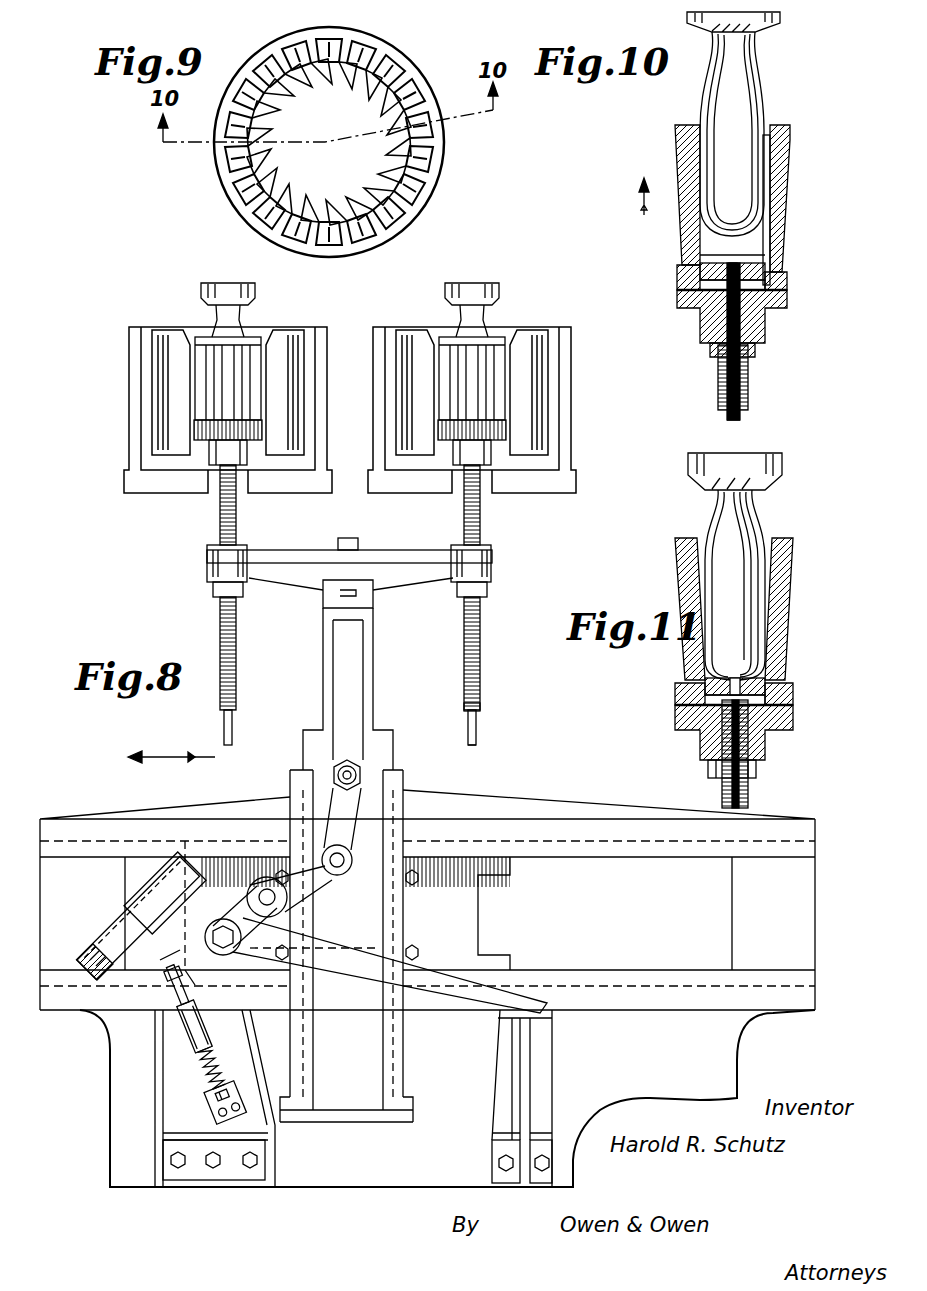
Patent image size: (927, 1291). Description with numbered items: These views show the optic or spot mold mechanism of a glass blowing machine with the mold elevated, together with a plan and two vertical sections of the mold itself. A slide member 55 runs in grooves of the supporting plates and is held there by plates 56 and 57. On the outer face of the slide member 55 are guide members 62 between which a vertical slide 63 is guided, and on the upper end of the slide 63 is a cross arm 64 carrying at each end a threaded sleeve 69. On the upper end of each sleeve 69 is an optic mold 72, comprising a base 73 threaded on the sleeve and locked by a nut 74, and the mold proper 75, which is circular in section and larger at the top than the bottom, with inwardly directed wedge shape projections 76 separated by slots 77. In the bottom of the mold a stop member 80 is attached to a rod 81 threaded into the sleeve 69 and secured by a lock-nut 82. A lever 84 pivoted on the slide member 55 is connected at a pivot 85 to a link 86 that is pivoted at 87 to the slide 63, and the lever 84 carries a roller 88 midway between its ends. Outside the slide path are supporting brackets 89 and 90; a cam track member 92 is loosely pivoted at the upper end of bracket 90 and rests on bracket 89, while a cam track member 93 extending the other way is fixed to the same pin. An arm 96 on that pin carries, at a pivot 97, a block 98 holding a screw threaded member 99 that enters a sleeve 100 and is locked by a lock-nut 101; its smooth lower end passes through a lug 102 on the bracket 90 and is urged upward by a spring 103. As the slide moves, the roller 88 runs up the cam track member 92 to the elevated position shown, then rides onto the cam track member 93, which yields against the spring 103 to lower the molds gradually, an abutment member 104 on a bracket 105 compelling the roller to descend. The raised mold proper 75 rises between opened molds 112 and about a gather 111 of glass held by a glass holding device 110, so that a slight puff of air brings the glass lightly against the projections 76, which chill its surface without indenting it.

In FIG. 8, the slide member 55 is at (480, 918).
In FIG. 8, the plate 56 is at (670, 1005).
In FIG. 8, the plate 57 is at (708, 858).
In FIG. 8, the guide members 62 is at (290, 788).
In FIG. 8, the slide 63 is at (390, 752).
In FIG. 8, the cross arm 64 is at (282, 566).
In FIG. 10, the sleeve 69 is at (752, 388).
In FIG. 11, the sleeve 69 is at (752, 797).
In FIG. 8, the sleeve 69 is at (237, 521).
In FIG. 10, the optic mold 72 is at (686, 238).
In FIG. 11, the optic mold 72 is at (792, 638).
In FIG. 8, the optic mold 72 is at (222, 340).
In FIG. 10, the base 73 is at (768, 325).
In FIG. 11, the base 73 is at (770, 740).
In FIG. 10, the nut 74 is at (760, 352).
In FIG. 11, the nut 74 is at (760, 768).
In FIG. 10, the mold proper 75 is at (785, 283).
In FIG. 11, the mold proper 75 is at (800, 695).
In FIG. 8, the mold proper 75 is at (197, 405).
In FIG. 9, the wedge shape projections 76 is at (395, 114).
In FIG. 10, the wedge shape projections 76 is at (760, 245).
In FIG. 9, the slots 77 is at (378, 70).
In FIG. 10, the slots 77 is at (780, 210).
In FIG. 8, the slots 77 is at (242, 385).
In FIG. 10, the stop member 80 is at (750, 263).
In FIG. 11, the stop member 80 is at (770, 683).
In FIG. 10, the rod 81 is at (745, 417).
In FIG. 8, the rod 81 is at (478, 735).
In FIG. 8, the lock-nut 82 is at (482, 706).
In FIG. 8, the lever 84 is at (313, 880).
In FIG. 8, the pivot 85 is at (335, 848).
In FIG. 8, the link 86 is at (356, 838).
In FIG. 8, the pivot 87 is at (347, 760).
In FIG. 8, the roller 88 is at (262, 878).
In FIG. 8, the supporting bracket 89 is at (548, 1078).
In FIG. 8, the supporting bracket 90 is at (272, 1160).
In FIG. 8, the cam track member 92 is at (458, 1003).
In FIG. 8, the cam track member 93 is at (165, 938).
In FIG. 8, the arm 96 is at (170, 935).
In FIG. 8, the pivot 97 is at (160, 962).
In FIG. 8, the block 98 is at (186, 972).
In FIG. 8, the screw threaded member 99 is at (197, 1118).
In FIG. 8, the sleeve 100 is at (226, 1017).
In FIG. 8, the lock-nut 101 is at (217, 980).
In FIG. 8, the lug 102 is at (183, 1101).
In FIG. 8, the spring 103 is at (239, 1053).
In FIG. 8, the abutment member 104 is at (105, 945).
In FIG. 8, the bracket 105 is at (118, 935).
In FIG. 10, the glass holding devices 110 is at (775, 28).
In FIG. 11, the glass holding devices 110 is at (785, 466).
In FIG. 8, the glass holding devices 110 is at (203, 296).
In FIG. 10, the gather of glass 111 is at (770, 105).
In FIG. 11, the gather of glass 111 is at (780, 605).
In FIG. 8, the gather of glass 111 is at (246, 330).
In FIG. 8, the molds 112 is at (140, 455).